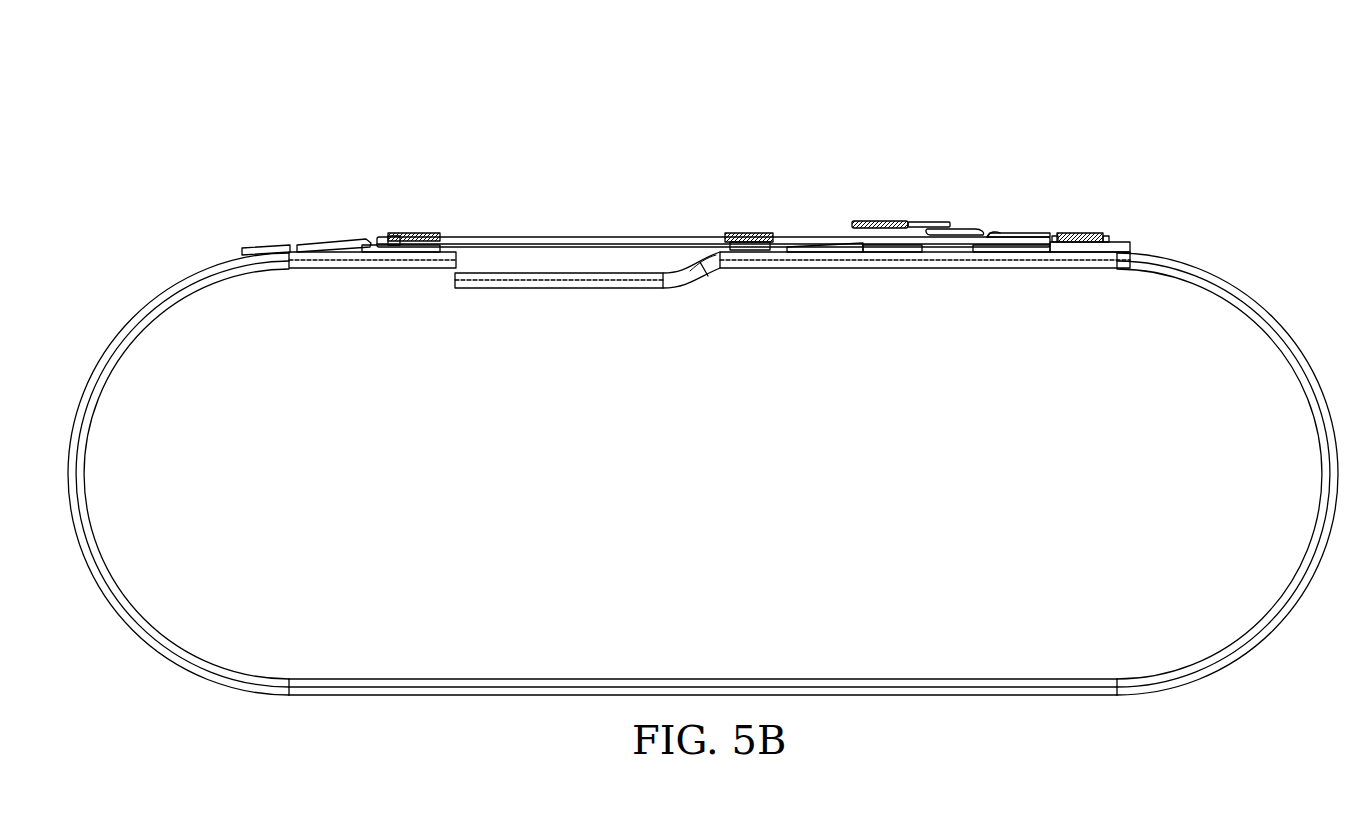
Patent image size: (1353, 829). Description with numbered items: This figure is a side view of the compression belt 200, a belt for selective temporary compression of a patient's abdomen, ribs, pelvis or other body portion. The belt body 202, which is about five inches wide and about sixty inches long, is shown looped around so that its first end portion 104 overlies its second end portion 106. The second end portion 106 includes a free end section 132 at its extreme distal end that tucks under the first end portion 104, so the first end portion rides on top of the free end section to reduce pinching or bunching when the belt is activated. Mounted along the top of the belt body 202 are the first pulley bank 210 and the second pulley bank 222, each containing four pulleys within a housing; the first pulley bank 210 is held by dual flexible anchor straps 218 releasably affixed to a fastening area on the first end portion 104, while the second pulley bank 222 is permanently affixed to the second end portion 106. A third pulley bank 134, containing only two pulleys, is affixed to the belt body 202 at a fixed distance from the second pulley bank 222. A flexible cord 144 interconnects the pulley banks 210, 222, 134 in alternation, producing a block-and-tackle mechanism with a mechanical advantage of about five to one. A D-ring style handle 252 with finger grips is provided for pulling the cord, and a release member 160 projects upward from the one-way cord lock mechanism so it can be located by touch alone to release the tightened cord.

The compression belt 200 is at (1216, 145).
The belt body 202 is at (1240, 289).
The first end portion 104 is at (375, 270).
The second end portion 106 is at (686, 284).
The free end section 132 is at (560, 290).
The flexible cord 144 is at (565, 236).
The flexible anchor straps 218 is at (282, 247).
The first pulley bank 210 is at (398, 233).
The second pulley bank 222 is at (768, 233).
The handle 252 is at (878, 221).
The release member 160 is at (1000, 232).
The third pulley bank 134 is at (1093, 232).